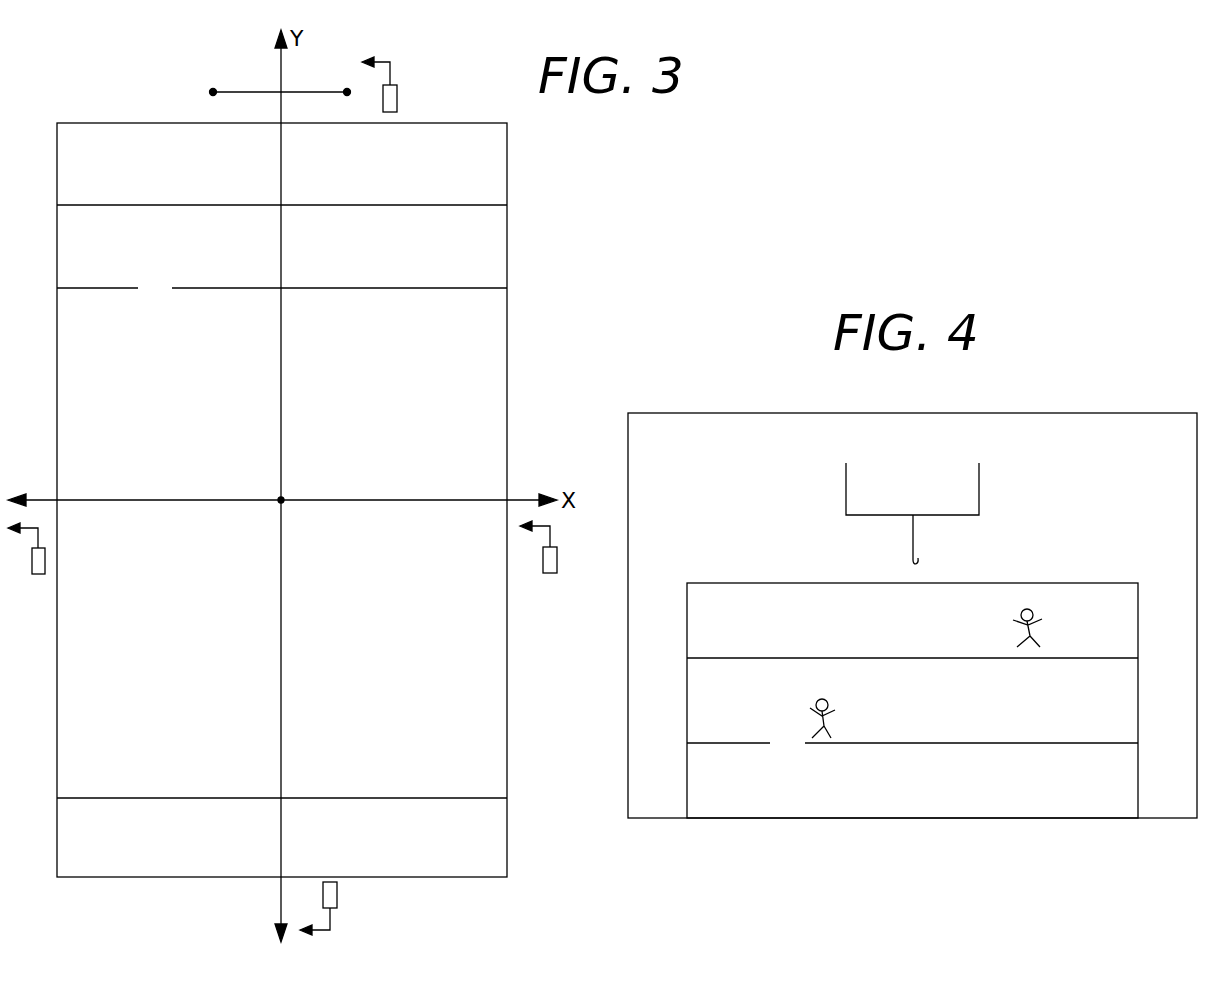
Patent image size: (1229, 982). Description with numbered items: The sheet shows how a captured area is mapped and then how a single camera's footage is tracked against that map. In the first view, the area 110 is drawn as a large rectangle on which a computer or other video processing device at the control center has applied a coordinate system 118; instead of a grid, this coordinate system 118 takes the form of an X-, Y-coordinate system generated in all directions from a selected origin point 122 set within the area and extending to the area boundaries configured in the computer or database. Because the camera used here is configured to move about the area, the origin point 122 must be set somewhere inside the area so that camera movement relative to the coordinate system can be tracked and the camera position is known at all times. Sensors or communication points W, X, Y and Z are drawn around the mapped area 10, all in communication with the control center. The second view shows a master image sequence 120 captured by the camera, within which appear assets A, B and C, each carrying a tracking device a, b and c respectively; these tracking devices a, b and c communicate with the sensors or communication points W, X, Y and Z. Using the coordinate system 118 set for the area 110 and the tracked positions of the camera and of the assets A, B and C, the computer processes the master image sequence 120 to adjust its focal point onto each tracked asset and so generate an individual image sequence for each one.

In FIG. 3, the mapped area 10 is at (282, 288).
In FIG. 4, the mapped area 10 is at (912, 743).
In FIG. 3, the area 110 is at (477, 378).
In FIG. 4, the area 110 is at (1112, 707).
In FIG. 3, the coordinate system 118 is at (281, 64).
In FIG. 4, the master image sequence 120 is at (1108, 378).
In FIG. 3, the origin point 122 is at (283, 497).
In FIG. 3, the sensor or communication point W is at (397, 98).
In FIG. 3, the sensor or communication point X is at (550, 573).
In FIG. 3, the sensor or communication point Y is at (337, 895).
In FIG. 3, the sensor or communication point Z is at (38, 574).
In FIG. 4, the asset A is at (822, 699).
In FIG. 4, the tracking device a is at (830, 726).
In FIG. 4, the asset B is at (1034, 612).
In FIG. 4, the tracking device b is at (1038, 636).
In FIG. 4, the asset C is at (980, 492).
In FIG. 4, the tracking device c is at (918, 560).